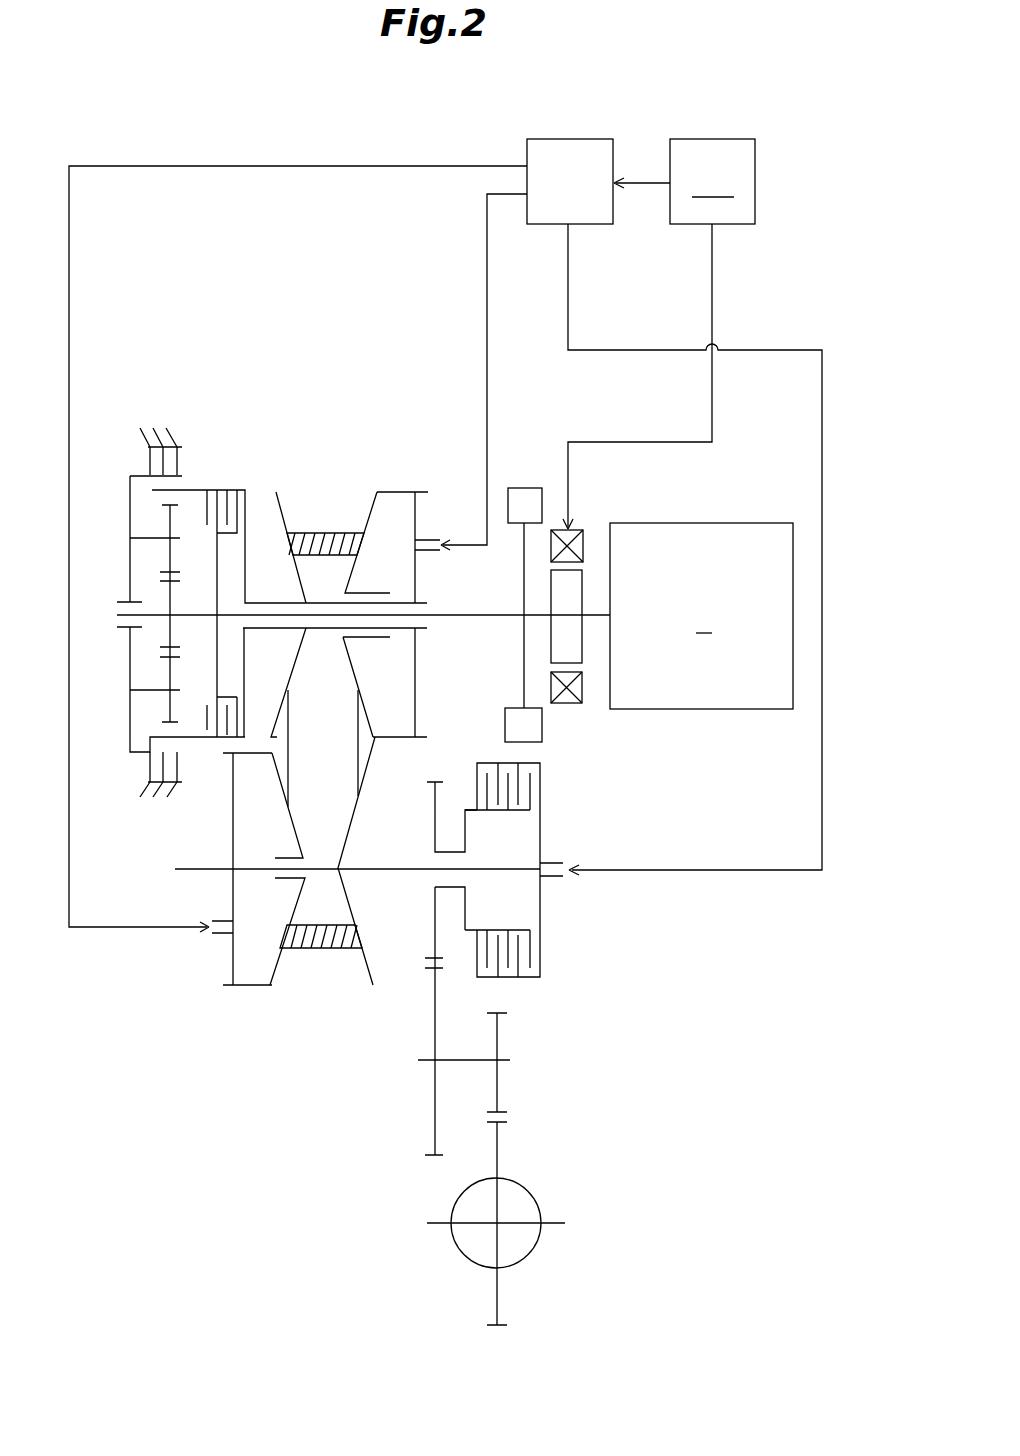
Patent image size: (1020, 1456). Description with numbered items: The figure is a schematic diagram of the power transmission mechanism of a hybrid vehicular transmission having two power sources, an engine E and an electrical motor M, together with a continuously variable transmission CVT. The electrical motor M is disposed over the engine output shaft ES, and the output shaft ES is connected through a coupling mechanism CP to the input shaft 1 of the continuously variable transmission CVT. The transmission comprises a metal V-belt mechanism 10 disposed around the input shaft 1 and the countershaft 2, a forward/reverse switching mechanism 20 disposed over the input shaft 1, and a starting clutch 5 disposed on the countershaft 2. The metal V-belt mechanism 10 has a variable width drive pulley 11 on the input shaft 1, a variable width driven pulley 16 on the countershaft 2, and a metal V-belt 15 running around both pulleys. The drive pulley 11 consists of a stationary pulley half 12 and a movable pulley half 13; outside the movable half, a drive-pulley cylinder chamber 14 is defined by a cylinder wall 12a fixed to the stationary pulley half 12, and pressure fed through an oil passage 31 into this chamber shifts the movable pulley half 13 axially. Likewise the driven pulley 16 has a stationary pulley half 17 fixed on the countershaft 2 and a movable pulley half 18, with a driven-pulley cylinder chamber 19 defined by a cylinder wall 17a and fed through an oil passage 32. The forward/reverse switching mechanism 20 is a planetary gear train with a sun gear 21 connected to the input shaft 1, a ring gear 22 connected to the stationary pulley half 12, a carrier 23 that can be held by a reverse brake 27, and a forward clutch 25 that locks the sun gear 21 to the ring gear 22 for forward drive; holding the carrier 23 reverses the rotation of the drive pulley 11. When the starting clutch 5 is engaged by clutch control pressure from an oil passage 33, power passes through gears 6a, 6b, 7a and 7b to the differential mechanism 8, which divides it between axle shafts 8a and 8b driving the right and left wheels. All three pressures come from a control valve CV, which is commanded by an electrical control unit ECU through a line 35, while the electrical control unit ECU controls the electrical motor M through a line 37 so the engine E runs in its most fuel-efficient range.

The input shaft 1 is at (483, 618).
The countershaft 2 is at (397, 875).
The starting clutch 5 is at (545, 948).
The gear 6a is at (435, 817).
The gear 6b is at (433, 1157).
The gear 7a is at (497, 1038).
The gear 7b is at (497, 1152).
The differential mechanism 8 is at (458, 1255).
The axle shaft 8a is at (439, 1223).
The axle shaft 8b is at (552, 1222).
The metal V-belt mechanism 10 is at (324, 568).
The variable width drive pulley 11 is at (396, 488).
The stationary pulley half 12 is at (280, 495).
The cylinder wall 12a is at (417, 578).
The movable pulley half 13 is at (366, 495).
The drive-pulley cylinder chamber 14 is at (398, 562).
The metal V-belt 15 is at (358, 740).
The variable width driven pulley 16 is at (265, 888).
The stationary pulley half 17 is at (367, 968).
The cylinder wall 17a is at (233, 833).
The movable pulley half 18 is at (275, 965).
The driven-pulley cylinder chamber 19 is at (278, 851).
The forward/reverse switching mechanism 20 is at (163, 583).
The sun gear 21 is at (168, 600).
The ring gear 22 is at (152, 735).
The carrier 23 is at (130, 513).
The forward clutch 25 is at (225, 488).
The reverse brake 27 is at (150, 460).
The oil passage 31 is at (487, 282).
The oil passage 32 is at (296, 165).
The oil passage 33 is at (822, 350).
The line 35 is at (638, 180).
The line 37 is at (712, 283).
The control valve CV is at (570, 181).
The electrical control unit ECU is at (712, 181).
The coupling mechanism CP is at (523, 488).
The electrical motor M is at (567, 710).
The engine E is at (701, 616).
The engine output shaft ES is at (600, 617).
The continuously variable transmission CVT is at (235, 375).